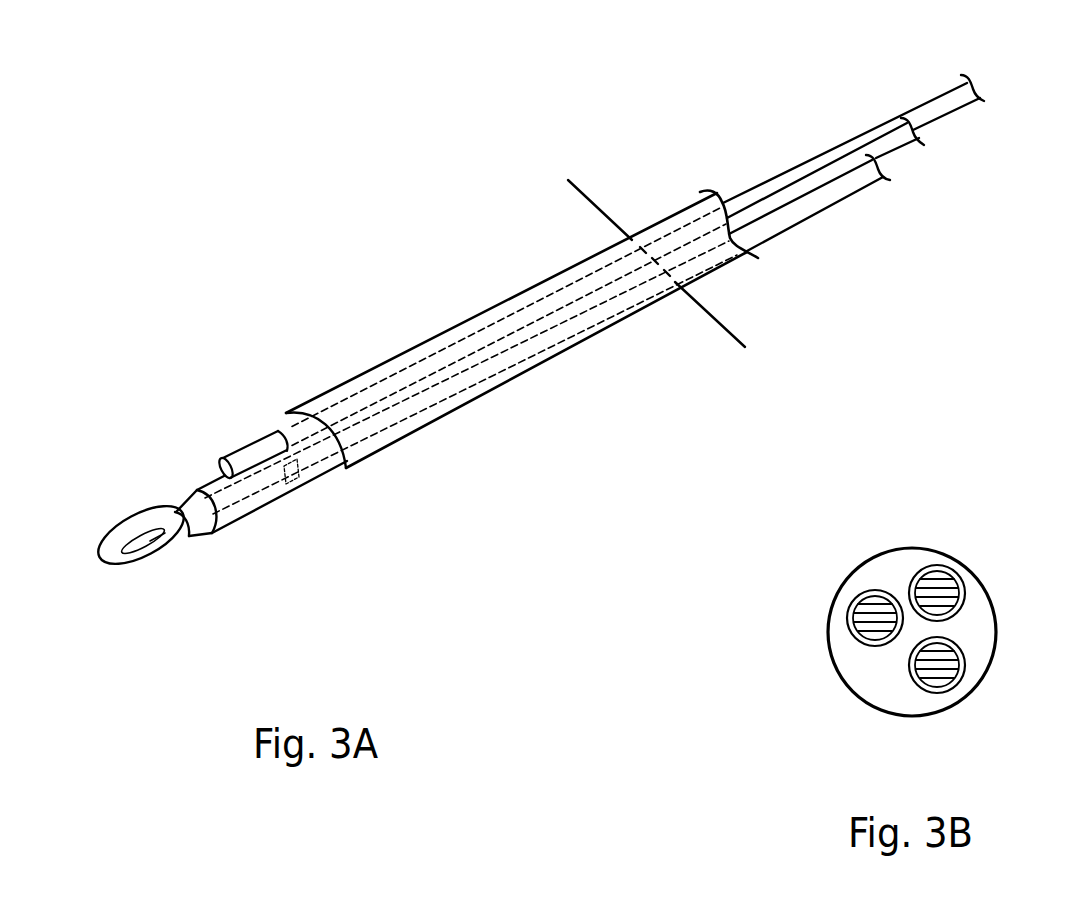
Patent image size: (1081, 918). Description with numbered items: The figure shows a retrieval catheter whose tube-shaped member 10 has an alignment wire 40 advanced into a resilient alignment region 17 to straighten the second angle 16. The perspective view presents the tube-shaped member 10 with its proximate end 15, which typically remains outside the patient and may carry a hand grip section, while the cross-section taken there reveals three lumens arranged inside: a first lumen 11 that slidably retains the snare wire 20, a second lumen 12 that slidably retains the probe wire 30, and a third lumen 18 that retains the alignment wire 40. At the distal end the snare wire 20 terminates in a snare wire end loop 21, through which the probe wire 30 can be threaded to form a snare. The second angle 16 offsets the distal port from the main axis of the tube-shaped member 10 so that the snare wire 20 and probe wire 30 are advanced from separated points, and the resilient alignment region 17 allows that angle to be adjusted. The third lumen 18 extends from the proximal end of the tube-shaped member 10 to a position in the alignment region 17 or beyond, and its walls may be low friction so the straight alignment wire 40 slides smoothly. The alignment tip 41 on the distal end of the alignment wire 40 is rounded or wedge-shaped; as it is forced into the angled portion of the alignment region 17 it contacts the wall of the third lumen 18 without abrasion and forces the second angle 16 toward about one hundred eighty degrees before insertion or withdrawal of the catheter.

In FIG. 3A, the tube-shaped member 10 is at (442, 334).
In FIG. 3B, the tube-shaped member 10 is at (940, 712).
In FIG. 3B, the first lumen 11 is at (960, 680).
In FIG. 3A, the second lumen 12 is at (277, 432).
In FIG. 3B, the second lumen 12 is at (848, 617).
In FIG. 3A, the proximate end 15 is at (733, 289).
In FIG. 3A, the second angle 16 is at (347, 466).
In FIG. 3A, the resilient alignment region 17 is at (315, 471).
In FIG. 3B, the third lumen 18 is at (960, 587).
In FIG. 3B, the snare wire 20 is at (943, 663).
In FIG. 3A, the snare wire end loop 21 is at (153, 551).
In FIG. 3A, the probe wire 30 is at (243, 448).
In FIG. 3B, the probe wire 30 is at (878, 600).
In FIG. 3A, the alignment wire 40 is at (863, 188).
In FIG. 3B, the alignment wire 40 is at (933, 582).
In FIG. 3A, the alignment tip 41 is at (293, 474).